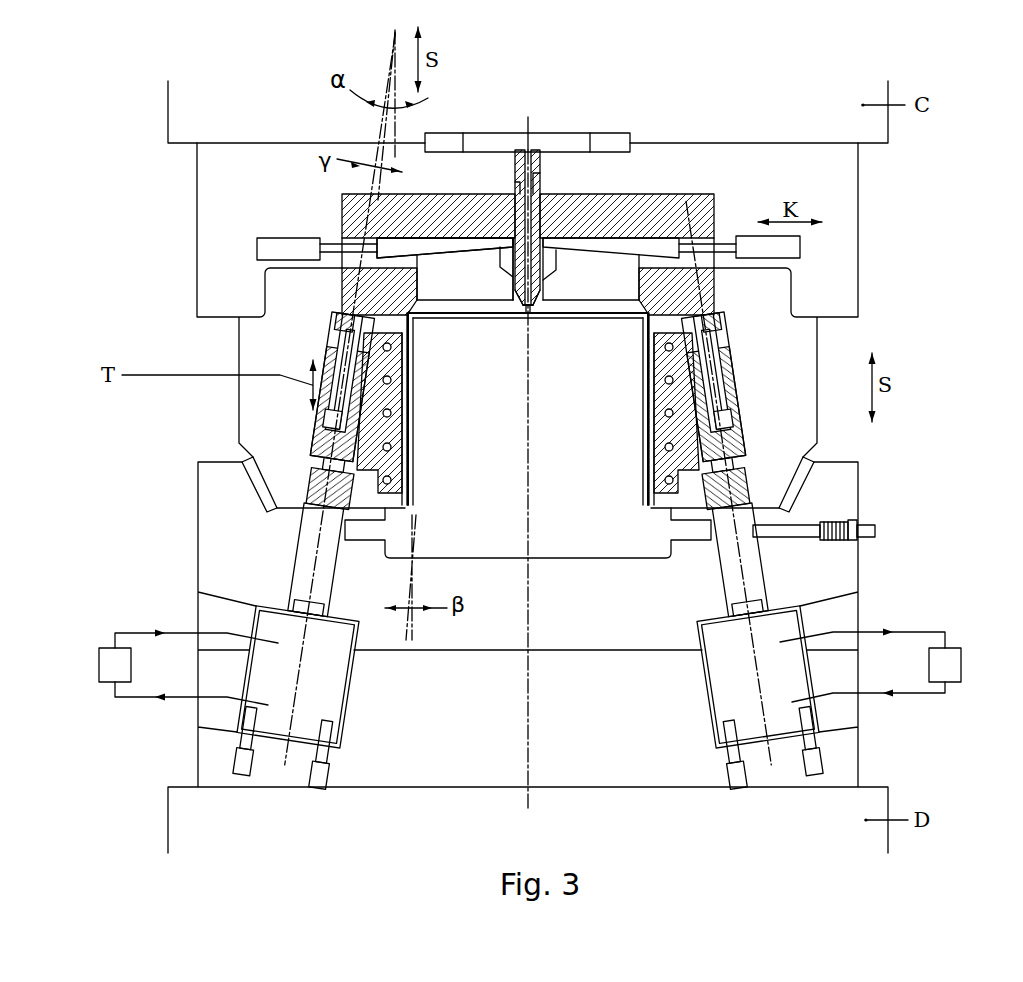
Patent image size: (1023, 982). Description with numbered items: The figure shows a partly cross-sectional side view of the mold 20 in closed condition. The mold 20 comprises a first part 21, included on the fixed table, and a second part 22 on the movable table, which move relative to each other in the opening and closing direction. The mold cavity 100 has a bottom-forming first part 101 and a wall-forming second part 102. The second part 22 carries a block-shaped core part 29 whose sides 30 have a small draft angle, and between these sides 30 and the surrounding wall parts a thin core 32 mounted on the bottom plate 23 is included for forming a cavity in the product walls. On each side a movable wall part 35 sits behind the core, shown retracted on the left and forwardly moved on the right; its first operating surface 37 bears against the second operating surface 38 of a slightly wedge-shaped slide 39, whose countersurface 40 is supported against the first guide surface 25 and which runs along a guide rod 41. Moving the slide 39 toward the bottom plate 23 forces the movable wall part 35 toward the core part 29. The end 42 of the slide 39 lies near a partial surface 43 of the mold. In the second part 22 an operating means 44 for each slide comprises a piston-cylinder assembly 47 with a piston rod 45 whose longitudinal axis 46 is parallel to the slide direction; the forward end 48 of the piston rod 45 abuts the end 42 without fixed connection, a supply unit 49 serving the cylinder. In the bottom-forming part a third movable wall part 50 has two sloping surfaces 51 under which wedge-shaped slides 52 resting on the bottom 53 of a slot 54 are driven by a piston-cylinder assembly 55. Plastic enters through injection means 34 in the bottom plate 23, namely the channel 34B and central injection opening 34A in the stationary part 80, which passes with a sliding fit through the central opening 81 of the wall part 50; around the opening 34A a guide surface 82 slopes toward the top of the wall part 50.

The mold 20 is at (925, 153).
The first part 21 is at (893, 226).
The second part 22 is at (893, 755).
The bottom plate 23 is at (222, 207).
The first guide surface 25 is at (332, 318).
The core part 29 is at (515, 505).
The sides 30 is at (413, 462).
The thin core 32 is at (410, 397).
The injection means 34 is at (723, 118).
The injection opening 34A is at (527, 302).
The channel 34B is at (535, 187).
The movable wall part 35 is at (660, 462).
The first operating surface 37 is at (370, 427).
The second operating surface 38 is at (355, 493).
The slide 39 is at (335, 468).
The countersurface 40 is at (337, 430).
The guide rod 41 is at (353, 367).
The end of the slide 42 is at (318, 470).
The partial surface 43 is at (767, 503).
The operating means 44 is at (213, 745).
The piston rod 45 is at (305, 582).
The longitudinal axis 46 is at (290, 723).
The piston-cylinder assembly 47 is at (333, 687).
The forward end 48 is at (350, 512).
The hydraulic pump 49 is at (107, 667).
The third movable wall part 50 is at (450, 283).
The sloping surface 51 is at (416, 172).
The wedge-shaped slide 52 is at (452, 242).
The bottom 53 is at (640, 205).
The slot 54 is at (463, 302).
The piston-cylinder assembly 55 is at (283, 248).
The stationary part 80 is at (538, 276).
The central opening 81 is at (510, 270).
The guide surface 82 is at (540, 305).
The mold cavity 100 is at (648, 427).
The first part 101 is at (603, 318).
The second part 102 is at (640, 395).